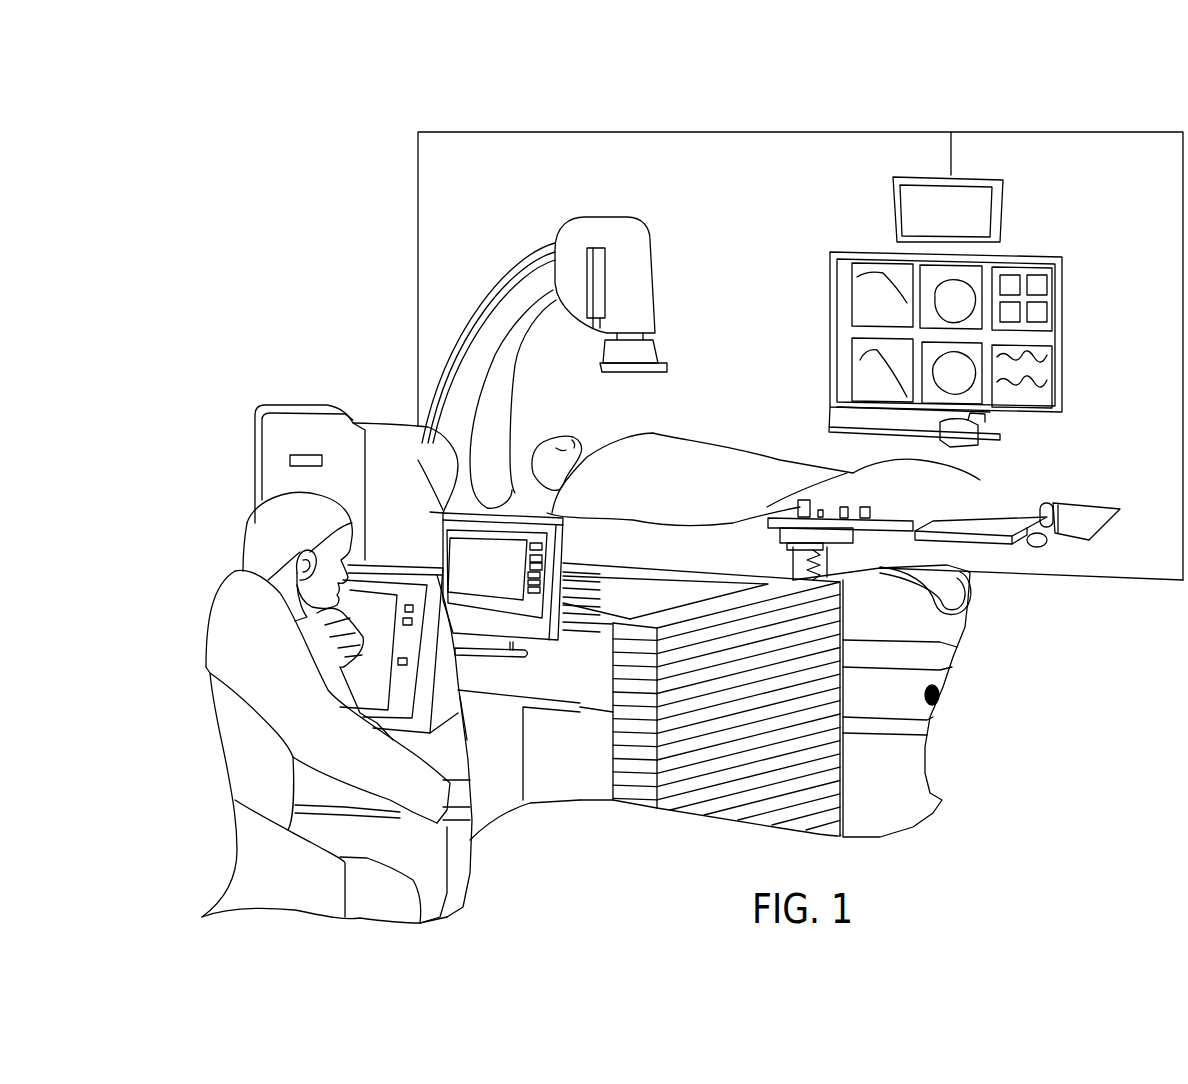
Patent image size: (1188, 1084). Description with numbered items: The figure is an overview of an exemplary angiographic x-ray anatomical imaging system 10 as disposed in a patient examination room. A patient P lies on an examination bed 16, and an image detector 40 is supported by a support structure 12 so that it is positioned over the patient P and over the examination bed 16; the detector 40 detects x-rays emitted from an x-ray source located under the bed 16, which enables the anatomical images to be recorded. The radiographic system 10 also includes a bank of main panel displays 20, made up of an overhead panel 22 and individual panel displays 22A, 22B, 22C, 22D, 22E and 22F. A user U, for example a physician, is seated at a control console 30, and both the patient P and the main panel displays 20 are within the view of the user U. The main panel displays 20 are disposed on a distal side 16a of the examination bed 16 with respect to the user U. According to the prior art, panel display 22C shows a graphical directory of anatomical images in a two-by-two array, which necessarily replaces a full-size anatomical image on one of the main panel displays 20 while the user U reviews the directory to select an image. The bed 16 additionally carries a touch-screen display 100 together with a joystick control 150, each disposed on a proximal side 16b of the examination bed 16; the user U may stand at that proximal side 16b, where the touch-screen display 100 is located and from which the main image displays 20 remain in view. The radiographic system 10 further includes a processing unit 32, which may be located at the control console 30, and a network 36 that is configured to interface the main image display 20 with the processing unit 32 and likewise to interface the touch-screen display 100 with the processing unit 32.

The angiographic x-ray anatomical imaging system 10 is at (398, 307).
The support structure 12 is at (642, 293).
The image detector 40 is at (648, 352).
The examination bed 16 is at (970, 580).
The distal side 16a is at (1097, 503).
The proximal side 16b is at (982, 520).
The touch-screen display 100 is at (997, 545).
The joystick control 150 is at (1047, 518).
The main panel displays 20 is at (1095, 295).
The overhead panel 22 is at (893, 204).
The panel display 22A is at (835, 283).
The panel display 22B is at (973, 273).
The panel display 22C is at (1027, 273).
The panel display 22D is at (842, 370).
The panel display 22E is at (977, 393).
The panel display 22F is at (1040, 370).
The control console 30 is at (228, 462).
The processing unit 32 is at (400, 425).
The network 36 is at (810, 131).
The patient P is at (647, 433).
The user U is at (243, 540).